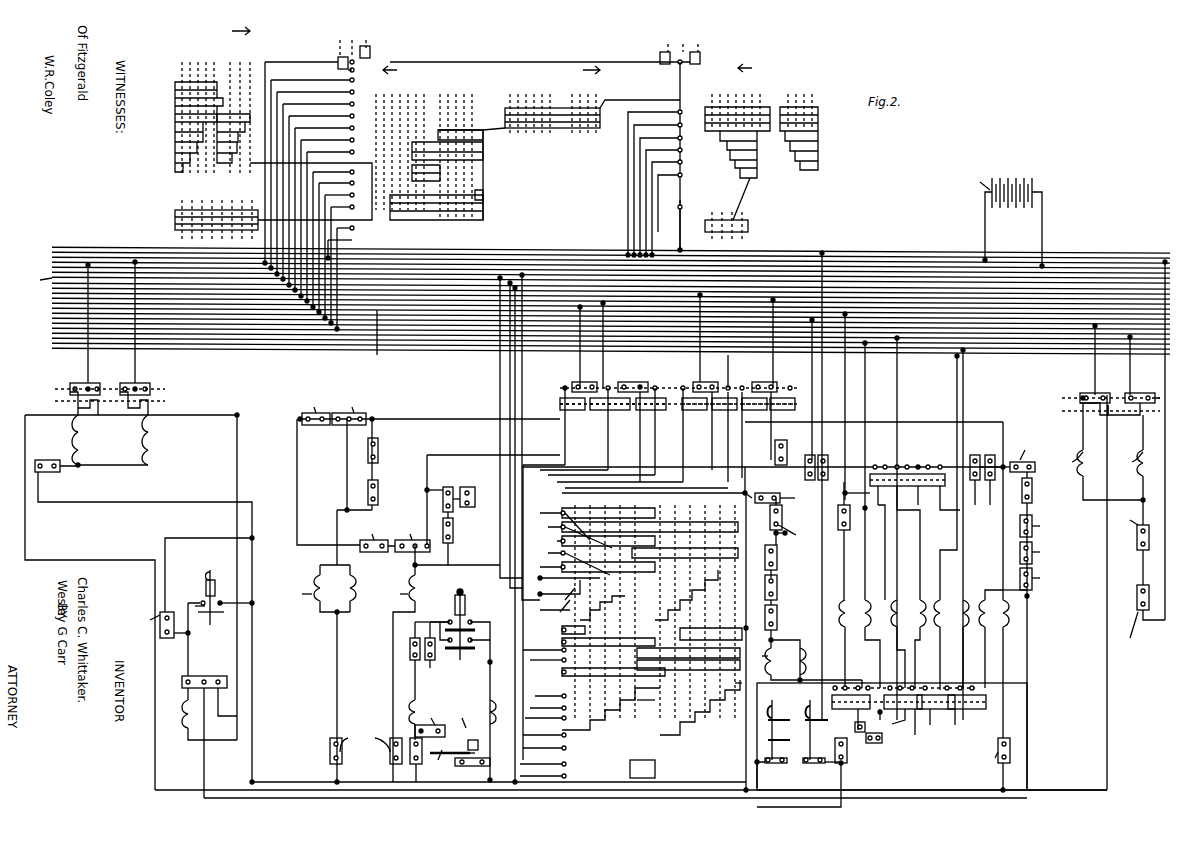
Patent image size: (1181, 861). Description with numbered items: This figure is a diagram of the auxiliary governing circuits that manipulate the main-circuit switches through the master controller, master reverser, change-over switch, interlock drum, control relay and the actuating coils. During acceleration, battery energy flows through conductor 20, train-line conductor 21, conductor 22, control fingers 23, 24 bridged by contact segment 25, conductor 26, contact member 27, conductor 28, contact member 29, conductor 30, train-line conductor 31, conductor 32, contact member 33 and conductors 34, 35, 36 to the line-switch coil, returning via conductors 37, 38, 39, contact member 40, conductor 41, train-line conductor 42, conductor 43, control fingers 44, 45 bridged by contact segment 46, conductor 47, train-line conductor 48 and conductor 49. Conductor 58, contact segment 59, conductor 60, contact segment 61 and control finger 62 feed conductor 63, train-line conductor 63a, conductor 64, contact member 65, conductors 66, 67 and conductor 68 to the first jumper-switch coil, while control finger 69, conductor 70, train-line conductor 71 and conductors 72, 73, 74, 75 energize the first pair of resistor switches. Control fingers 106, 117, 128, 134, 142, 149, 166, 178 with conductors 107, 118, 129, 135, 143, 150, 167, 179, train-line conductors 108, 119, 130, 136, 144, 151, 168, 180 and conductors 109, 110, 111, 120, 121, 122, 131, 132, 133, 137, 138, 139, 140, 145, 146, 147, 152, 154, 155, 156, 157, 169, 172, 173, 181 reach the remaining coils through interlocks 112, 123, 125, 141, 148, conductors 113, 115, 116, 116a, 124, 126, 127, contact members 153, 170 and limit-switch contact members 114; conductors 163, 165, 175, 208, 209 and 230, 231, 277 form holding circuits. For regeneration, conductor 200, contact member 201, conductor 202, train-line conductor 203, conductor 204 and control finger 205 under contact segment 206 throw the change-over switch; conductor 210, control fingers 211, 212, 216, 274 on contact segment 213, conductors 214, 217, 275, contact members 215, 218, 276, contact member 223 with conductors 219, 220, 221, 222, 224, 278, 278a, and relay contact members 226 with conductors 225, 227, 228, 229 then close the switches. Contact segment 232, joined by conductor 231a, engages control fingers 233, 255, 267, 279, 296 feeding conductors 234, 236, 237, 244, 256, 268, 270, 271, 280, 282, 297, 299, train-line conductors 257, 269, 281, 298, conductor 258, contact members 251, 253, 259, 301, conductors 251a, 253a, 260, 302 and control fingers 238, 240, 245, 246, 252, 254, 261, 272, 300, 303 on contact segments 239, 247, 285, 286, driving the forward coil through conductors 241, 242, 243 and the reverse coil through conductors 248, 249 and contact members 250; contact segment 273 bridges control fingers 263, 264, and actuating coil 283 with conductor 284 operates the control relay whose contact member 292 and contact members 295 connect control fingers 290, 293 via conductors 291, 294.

The conductor 20 is at (985, 218).
The train-line conductor 21 is at (935, 262).
The conductor 22 is at (628, 218).
The control finger 23 is at (657, 184).
The control finger 24 is at (654, 178).
The contact segment 25 is at (756, 150).
The conductor 26 is at (678, 84).
The contact member 27 is at (660, 64).
The conductor 28 is at (572, 62).
The contact member 29 is at (309, 60).
The conductor 30 is at (282, 157).
The train-line conductor 31 is at (146, 268).
The conductor 32 is at (86, 366).
The contact member 33 is at (70, 404).
The conductor 34 is at (99, 416).
The conductor 35 is at (125, 418).
The conductor 36 is at (237, 470).
The conductor 37 is at (237, 716).
The conductor 38 is at (216, 776).
The negative conductor 39 is at (290, 782).
The contact member 40 is at (1092, 416).
The conductor 41 is at (1093, 374).
The train-line conductor 42 is at (1063, 328).
The conductor 43 is at (339, 246).
The control finger 44 is at (352, 206).
The control finger 45 is at (337, 262).
The contact segment 46 is at (425, 222).
The conductor 47 is at (344, 276).
The train-line conductor 48 is at (408, 262).
The conductor 49 is at (1042, 218).
The conductor 58 is at (633, 98).
The contact segment 59 is at (572, 128).
The conductor 60 is at (496, 128).
The contact segment 61 is at (462, 152).
The control finger 62 is at (333, 167).
The conductor 63 is at (316, 234).
The train-line conductor 63a is at (420, 302).
The conductor 64 is at (580, 362).
The contact member 65 is at (585, 382).
The conductor 66 is at (600, 444).
The conductor 67 is at (460, 568).
The conductor 68 is at (393, 630).
The control finger 69 is at (675, 195).
The conductor 70 is at (678, 214).
The train-line conductor 71 is at (762, 252).
The conductor 72 is at (823, 380).
The conductor 73 is at (778, 490).
The conductor 74 is at (778, 572).
The conductor 75 is at (807, 672).
The control finger 106 is at (350, 182).
The conductor 107 is at (329, 243).
The train-line conductor 108 is at (376, 340).
The conductor 109 is at (838, 410).
The conductor 110 is at (850, 496).
The conductor 111 is at (850, 541).
The interlock 112 is at (834, 690).
The conductor 113 is at (866, 709).
The contact members 114 is at (824, 771).
The conductor 115 is at (204, 776).
The conductor 116 is at (889, 730).
The conductor 116a is at (771, 774).
The control finger 117 is at (660, 190).
The conductor 118 is at (628, 146).
The train-line conductor 119 is at (689, 337).
The conductor 120 is at (897, 367).
The conductor 121 is at (897, 552).
The conductor 122 is at (905, 665).
The interlock 123 is at (887, 666).
The conductor 124 is at (921, 727).
The interlock 125 is at (859, 673).
The conductor 126 is at (901, 720).
The conductor 127 is at (899, 738).
The control finger 128 is at (663, 196).
The conductor 129 is at (634, 168).
The train-line conductor 130 is at (733, 370).
The conductor 131 is at (865, 412).
The conductor 132 is at (862, 552).
The conductor 133 is at (895, 642).
The control finger 134 is at (666, 202).
The conductor 135 is at (640, 183).
The train-line conductor 136 is at (761, 343).
The conductor 137 is at (965, 380).
The conductor 138 is at (963, 541).
The conductor 139 is at (973, 648).
The conductor 140 is at (956, 727).
The interlock 141 is at (939, 720).
The control finger 142 is at (667, 195).
The conductor 143 is at (652, 198).
The train-line conductor 144 is at (798, 344).
The conductor 145 is at (955, 392).
The conductor 146 is at (960, 541).
The conductor 147 is at (950, 654).
The interlock 148 is at (972, 706).
The control finger 149 is at (327, 134).
The conductor 150 is at (310, 212).
The train-line conductor 151 is at (268, 336).
The conductor 152 is at (778, 378).
The contact member 153 is at (752, 386).
The conductor 154 is at (780, 438).
The conductor 155 is at (1012, 500).
The conductor 156 is at (1020, 578).
The conductor 157 is at (1003, 730).
The conductor 163 is at (25, 451).
The conductor 165 is at (272, 419).
The control finger 166 is at (324, 122).
The conductor 167 is at (305, 203).
The train-line conductor 168 is at (468, 292).
The conductor 169 is at (693, 362).
The contact member 170 is at (714, 374).
The conductor 172 is at (337, 526).
The conductor 173 is at (337, 664).
The conductor 175 is at (297, 480).
The control finger 178 is at (353, 194).
The conductor 179 is at (333, 252).
The train-line conductor 180 is at (445, 327).
The conductor 181 is at (805, 377).
The conductor 200 is at (1163, 372).
The contact member 201 is at (1142, 392).
The conductor 202 is at (1130, 370).
The train-line conductor 203 is at (1040, 340).
The conductor 204 is at (354, 240).
The control finger 205 is at (359, 228).
The contact segment 206 is at (212, 212).
The conductor 208 is at (746, 770).
The conductor 209 is at (742, 598).
The conductor 210 is at (725, 494).
The control finger 211 is at (592, 543).
The control finger 212 is at (627, 552).
The contact segment 213 is at (660, 530).
The conductor 214 is at (742, 444).
The contact member 215 is at (768, 435).
The control finger 216 is at (581, 536).
The conductor 217 is at (679, 478).
The contact member 218 is at (728, 410).
The conductor 219 is at (857, 485).
The conductor 220 is at (883, 552).
The conductor 221 is at (928, 552).
The conductor 222 is at (935, 488).
The contact member 223 is at (939, 454).
The conductor 224 is at (945, 460).
The conductor 225 is at (474, 290).
The auxiliary contact members 226 is at (221, 618).
The conductor 227 is at (237, 644).
The conductor 228 is at (171, 648).
The conductor 229 is at (215, 552).
The conductor 230 is at (777, 654).
The conductor 231 is at (785, 542).
The conductor 231a is at (235, 147).
The contact segment 232 is at (218, 150).
The control finger 233 is at (321, 110).
The conductor 234 is at (300, 195).
The conductor 236 is at (510, 377).
The conductor 237 is at (505, 678).
The control finger 238 is at (567, 728).
The contact segment 239 is at (628, 718).
The control finger 240 is at (568, 676).
The conductor 241 is at (500, 711).
The conductor 242 is at (453, 660).
The conductor 243 is at (472, 767).
The conductor 244 is at (549, 607).
The control finger 245 is at (590, 624).
The control finger 246 is at (608, 632).
The contact segment 247 is at (610, 604).
The conductor 248 is at (478, 580).
The conductor 249 is at (439, 758).
The auxiliary contact members 250 is at (452, 744).
The contact segment 251 is at (698, 410).
The conductor 251a is at (672, 431).
The control finger 252 is at (580, 598).
The contact member 253 is at (785, 377).
The conductor 253a is at (785, 405).
The control finger 254 is at (583, 590).
The control finger 255 is at (330, 146).
The conductor 256 is at (312, 221).
The train-line conductor 257 is at (358, 325).
The conductor 258 is at (636, 382).
The contact member 259 is at (631, 344).
The conductor 260 is at (633, 435).
The control finger 261 is at (554, 590).
The control finger 263 is at (560, 764).
The control finger 264 is at (560, 774).
The control finger 267 is at (318, 98).
The conductor 268 is at (296, 186).
The train-line conductor 269 is at (408, 322).
The conductor 270 is at (500, 364).
The conductor 271 is at (544, 674).
The control finger 272 is at (547, 758).
The contact segment 273 is at (658, 768).
The control finger 274 is at (594, 569).
The conductor 275 is at (610, 481).
The contact member 276 is at (622, 410).
The conductor 277 is at (347, 464).
The conductor 278 is at (623, 445).
The conductor 278a is at (885, 454).
The control finger 279 is at (312, 74).
The conductor 280 is at (288, 168).
The train-line conductor 281 is at (450, 272).
The conductor 282 is at (522, 368).
The actuating coil 283 is at (448, 565).
The conductor 284 is at (483, 594).
The contact segment 285 is at (682, 645).
The contact segment 286 is at (720, 700).
The control finger 290 is at (559, 650).
The conductor 291 is at (470, 626).
The contact member 292 is at (487, 634).
The control finger 293 is at (562, 660).
The conductor 294 is at (547, 700).
The contact members 295 is at (481, 654).
The control finger 296 is at (315, 86).
The conductor 297 is at (292, 177).
The train-line conductor 298 is at (385, 270).
The conductor 299 is at (515, 391).
The control finger 300 is at (565, 568).
The contact member 301 is at (572, 410).
The conductor 302 is at (568, 436).
The control finger 303 is at (564, 578).